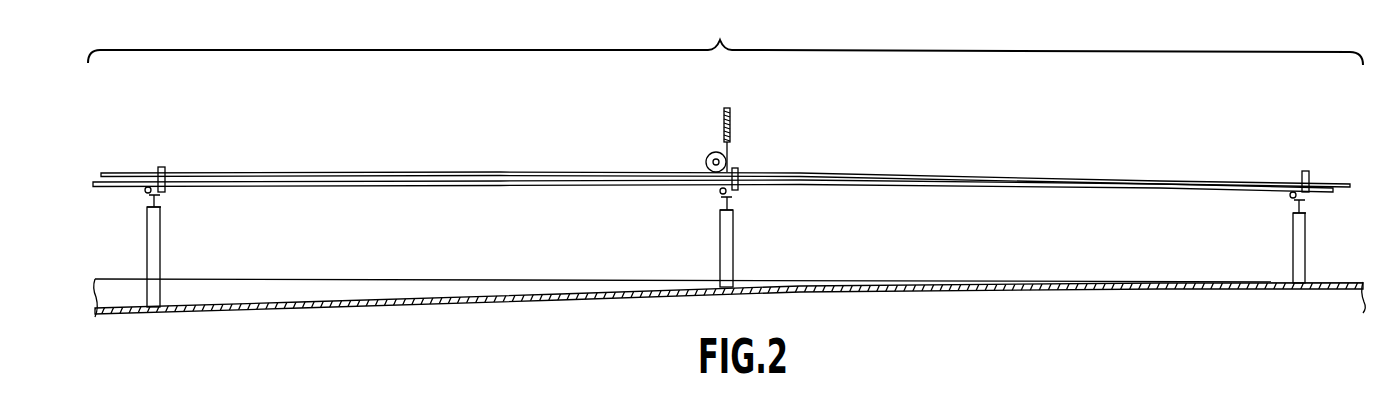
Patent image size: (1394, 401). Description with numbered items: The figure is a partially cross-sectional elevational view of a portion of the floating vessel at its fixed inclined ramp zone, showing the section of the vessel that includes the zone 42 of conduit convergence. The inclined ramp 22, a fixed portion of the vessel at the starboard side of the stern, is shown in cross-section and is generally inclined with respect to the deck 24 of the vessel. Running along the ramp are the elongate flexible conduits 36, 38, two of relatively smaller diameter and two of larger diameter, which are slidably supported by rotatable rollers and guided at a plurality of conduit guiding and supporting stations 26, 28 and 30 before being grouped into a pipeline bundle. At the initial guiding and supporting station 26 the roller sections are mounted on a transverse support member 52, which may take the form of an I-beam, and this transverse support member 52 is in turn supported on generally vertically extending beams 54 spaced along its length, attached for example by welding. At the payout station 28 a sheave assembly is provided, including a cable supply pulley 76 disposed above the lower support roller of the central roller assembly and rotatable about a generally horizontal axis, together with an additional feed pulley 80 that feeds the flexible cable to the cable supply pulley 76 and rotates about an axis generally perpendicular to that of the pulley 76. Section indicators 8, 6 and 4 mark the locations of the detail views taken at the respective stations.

The zone of conduit convergence 42 is at (725, 38).
The conduit 36 is at (573, 172).
The conduit 38 is at (600, 185).
The conduit guiding and supporting station 30 is at (172, 163).
The payout station 28 is at (746, 162).
The initial guiding and supporting station 26 is at (1314, 172).
The feed pulley 80 is at (733, 122).
The cable supply pulley 76 is at (704, 152).
The transverse support member 52 is at (162, 200).
The vertically extending beam 54 is at (160, 246).
The deck 24 is at (418, 280).
The ramp 22 is at (538, 297).
The section line 8- 8 is at (130, 118).
The section line 6- 6 is at (687, 92).
The section line 4- 4 is at (1272, 112).